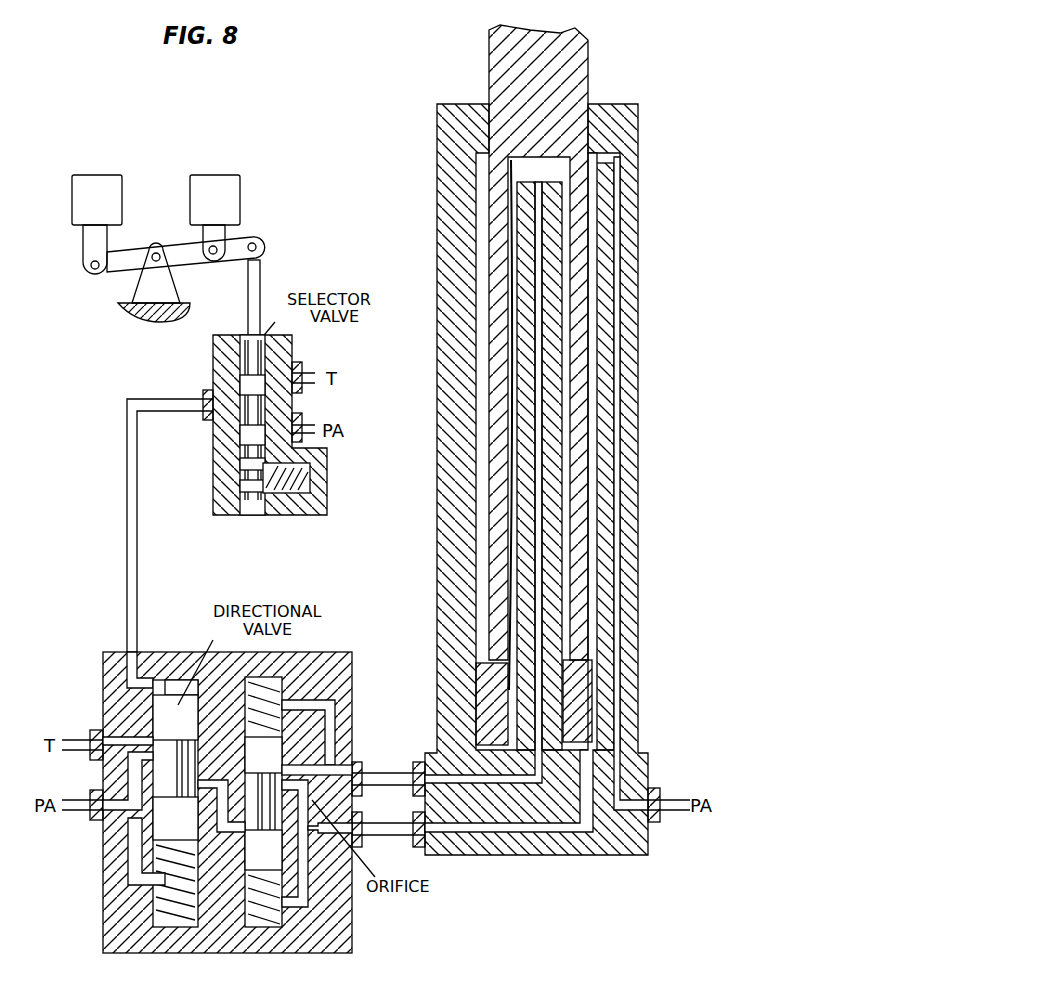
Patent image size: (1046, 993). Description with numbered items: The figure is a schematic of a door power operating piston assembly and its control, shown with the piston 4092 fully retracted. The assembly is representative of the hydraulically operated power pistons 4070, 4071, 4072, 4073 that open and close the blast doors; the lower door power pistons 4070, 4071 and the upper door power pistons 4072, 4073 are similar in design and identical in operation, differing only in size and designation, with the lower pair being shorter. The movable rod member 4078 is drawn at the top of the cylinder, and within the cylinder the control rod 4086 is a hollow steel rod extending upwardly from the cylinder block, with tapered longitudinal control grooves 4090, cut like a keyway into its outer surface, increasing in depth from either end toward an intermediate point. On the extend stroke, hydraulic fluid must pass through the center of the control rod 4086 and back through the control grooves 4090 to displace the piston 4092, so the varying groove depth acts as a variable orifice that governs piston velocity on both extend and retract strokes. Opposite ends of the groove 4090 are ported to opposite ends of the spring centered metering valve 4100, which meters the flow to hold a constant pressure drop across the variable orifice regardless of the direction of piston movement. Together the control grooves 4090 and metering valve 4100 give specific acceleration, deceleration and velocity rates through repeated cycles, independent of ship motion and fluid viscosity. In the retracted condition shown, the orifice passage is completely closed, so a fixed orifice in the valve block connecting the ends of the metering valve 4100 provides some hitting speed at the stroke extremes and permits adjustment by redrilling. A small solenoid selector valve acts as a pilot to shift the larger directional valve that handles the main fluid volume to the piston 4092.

The lower door power piston 4070 is at (574, 479).
The lower door power piston 4071 is at (574, 479).
The upper door power piston 4072 is at (574, 479).
The upper door power piston 4073 is at (640, 433).
The piston rod / cup 4078 is at (583, 67).
The control rod 4086 is at (552, 632).
The control grooves 4090 is at (565, 395).
The piston 4092 is at (587, 692).
The spring centered metering valve 4100 is at (350, 928).